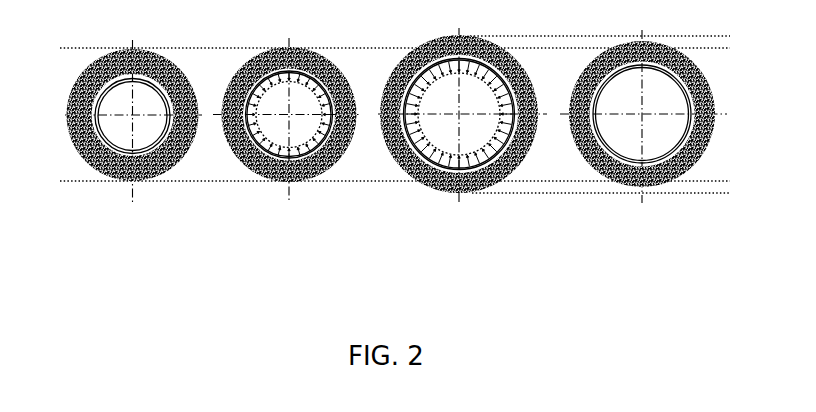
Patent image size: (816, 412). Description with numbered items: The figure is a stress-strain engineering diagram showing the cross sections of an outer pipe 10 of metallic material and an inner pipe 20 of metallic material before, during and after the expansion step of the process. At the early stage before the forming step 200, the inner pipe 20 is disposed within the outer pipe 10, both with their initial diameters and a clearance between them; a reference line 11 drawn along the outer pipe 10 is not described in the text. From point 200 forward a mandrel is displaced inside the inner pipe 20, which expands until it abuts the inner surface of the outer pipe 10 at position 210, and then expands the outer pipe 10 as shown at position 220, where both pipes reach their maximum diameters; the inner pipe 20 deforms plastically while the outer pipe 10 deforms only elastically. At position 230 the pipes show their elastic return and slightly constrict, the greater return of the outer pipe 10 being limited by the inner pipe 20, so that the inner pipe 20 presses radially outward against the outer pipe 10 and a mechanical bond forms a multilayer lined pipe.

The outer pipe 10 is at (87, 160).
The outer surface of insulating layer 11 is at (100, 184).
The inner pipe 20 is at (100, 93).
The forming step 200 is at (133, 136).
The position 210 is at (289, 135).
The position 220 is at (459, 129).
The position 230 is at (642, 133).